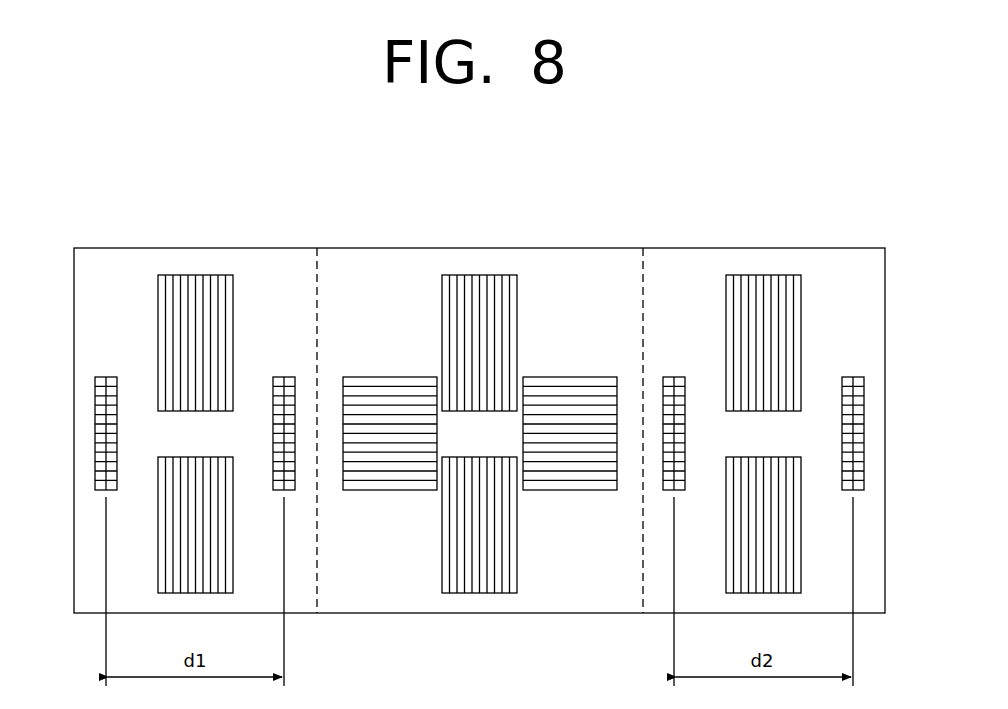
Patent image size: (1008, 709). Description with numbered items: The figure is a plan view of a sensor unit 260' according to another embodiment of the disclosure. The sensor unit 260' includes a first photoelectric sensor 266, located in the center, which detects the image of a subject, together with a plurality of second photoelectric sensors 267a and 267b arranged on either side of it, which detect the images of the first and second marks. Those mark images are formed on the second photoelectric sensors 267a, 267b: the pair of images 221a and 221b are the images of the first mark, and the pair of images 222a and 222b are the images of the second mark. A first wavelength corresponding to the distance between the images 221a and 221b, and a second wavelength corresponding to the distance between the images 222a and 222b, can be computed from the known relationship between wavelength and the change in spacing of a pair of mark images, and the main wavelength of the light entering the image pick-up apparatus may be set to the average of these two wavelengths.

The sensor unit 260' is at (479, 374).
The image of the first mark 221a is at (105, 377).
The image of the first mark 221b is at (284, 377).
The image of the second mark 222a is at (673, 377).
The image of the second mark 222b is at (853, 377).
The first photoelectric sensor 266 is at (437, 585).
The second photoelectric sensor 267a is at (272, 428).
The second photoelectric sensor 267b is at (681, 371).